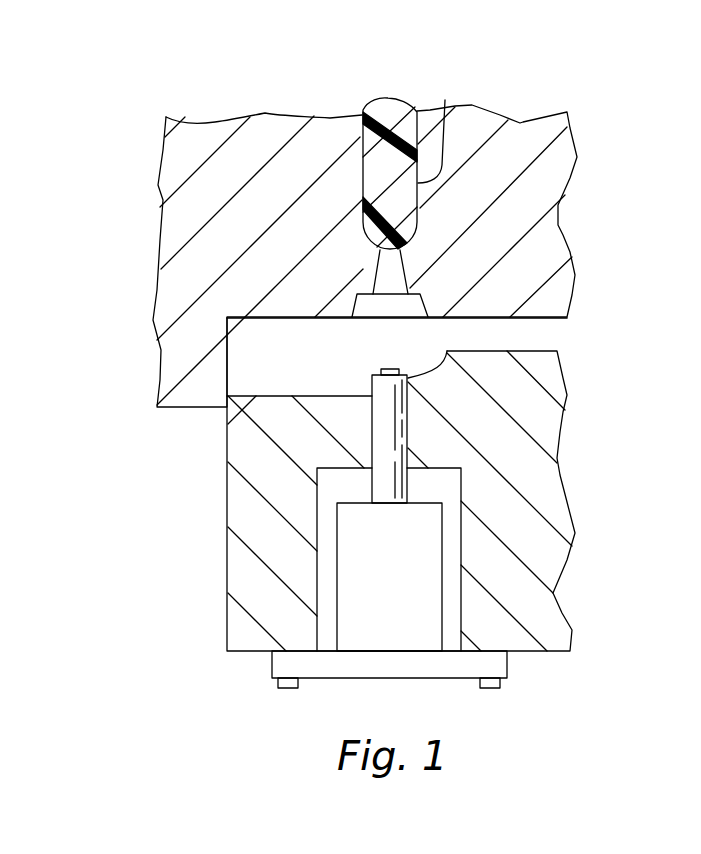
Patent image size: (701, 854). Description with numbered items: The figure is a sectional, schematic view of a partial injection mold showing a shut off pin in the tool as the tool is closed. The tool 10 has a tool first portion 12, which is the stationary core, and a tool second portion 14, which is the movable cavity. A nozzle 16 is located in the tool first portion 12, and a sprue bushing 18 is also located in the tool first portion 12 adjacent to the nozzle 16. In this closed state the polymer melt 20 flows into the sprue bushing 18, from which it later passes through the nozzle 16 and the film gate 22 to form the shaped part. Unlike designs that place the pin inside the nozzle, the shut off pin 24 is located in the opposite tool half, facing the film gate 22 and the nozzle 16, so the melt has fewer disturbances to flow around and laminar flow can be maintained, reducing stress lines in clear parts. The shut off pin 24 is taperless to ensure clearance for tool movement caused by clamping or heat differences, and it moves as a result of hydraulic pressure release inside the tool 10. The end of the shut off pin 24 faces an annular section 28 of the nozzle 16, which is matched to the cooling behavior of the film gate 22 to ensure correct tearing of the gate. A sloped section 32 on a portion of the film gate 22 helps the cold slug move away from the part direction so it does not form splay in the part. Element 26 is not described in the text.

The tool 10 is at (165, 101).
The tool first portion 12 is at (613, 110).
The tool second portion 14 is at (613, 352).
The nozzle 16 is at (372, 266).
The sprue bushing 18 is at (445, 100).
The polymer melt 20 is at (385, 118).
The film gate 22 is at (293, 367).
The shut off pin 24 is at (380, 441).
The nut / retaining block 26 is at (335, 573).
The annular section 28 is at (357, 306).
The sloped section 32 is at (420, 377).